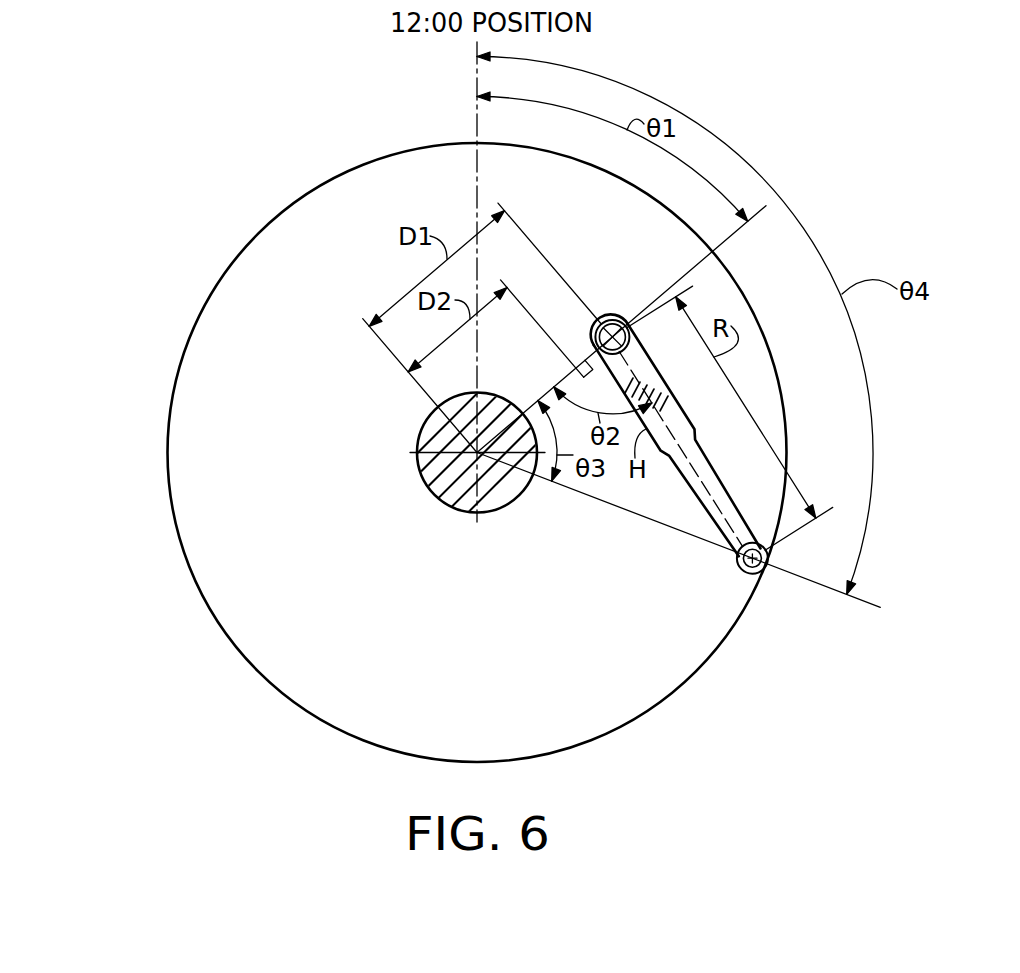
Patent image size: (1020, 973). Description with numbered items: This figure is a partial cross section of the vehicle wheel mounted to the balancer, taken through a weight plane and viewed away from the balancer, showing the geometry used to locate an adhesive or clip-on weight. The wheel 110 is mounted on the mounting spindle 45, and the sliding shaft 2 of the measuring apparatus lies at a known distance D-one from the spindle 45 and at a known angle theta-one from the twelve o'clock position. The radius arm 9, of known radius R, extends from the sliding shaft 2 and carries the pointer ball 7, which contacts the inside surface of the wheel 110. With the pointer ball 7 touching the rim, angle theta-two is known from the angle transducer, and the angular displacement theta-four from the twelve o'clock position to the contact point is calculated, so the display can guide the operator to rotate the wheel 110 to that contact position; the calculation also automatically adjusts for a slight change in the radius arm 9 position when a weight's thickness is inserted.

The sliding shaft 2 is at (603, 320).
The radius arm 9 is at (616, 320).
The pointer ball 7 is at (750, 578).
The mounting spindle 45 is at (425, 485).
The wheel 110 is at (185, 562).